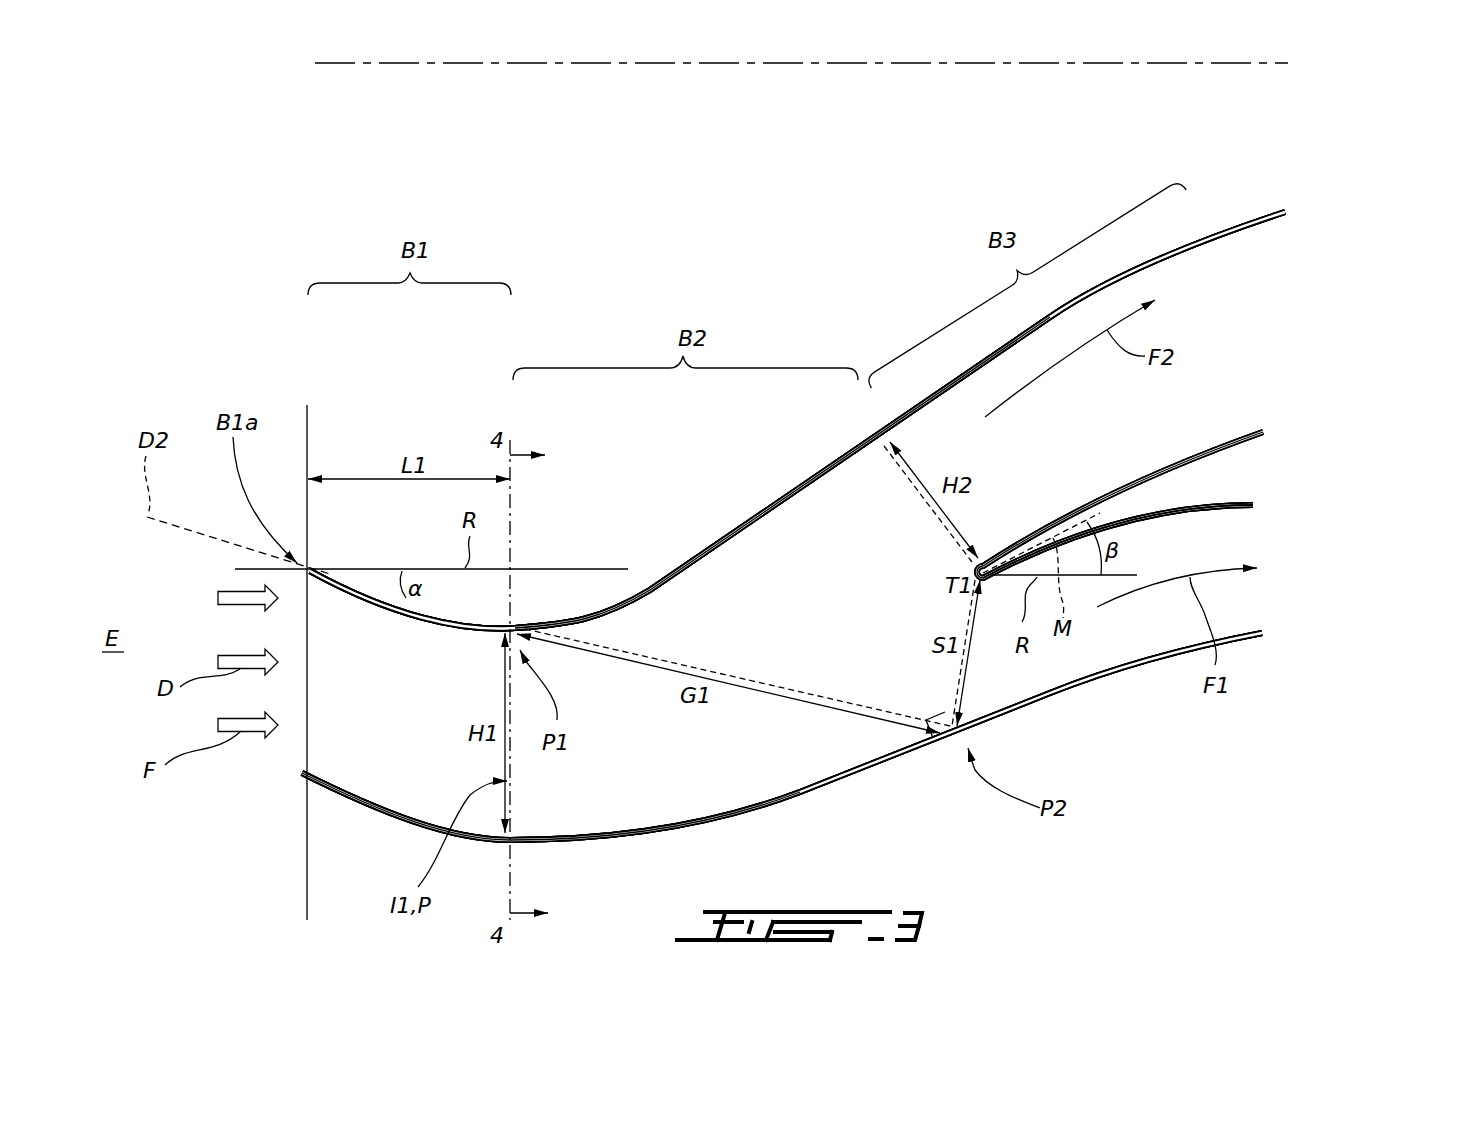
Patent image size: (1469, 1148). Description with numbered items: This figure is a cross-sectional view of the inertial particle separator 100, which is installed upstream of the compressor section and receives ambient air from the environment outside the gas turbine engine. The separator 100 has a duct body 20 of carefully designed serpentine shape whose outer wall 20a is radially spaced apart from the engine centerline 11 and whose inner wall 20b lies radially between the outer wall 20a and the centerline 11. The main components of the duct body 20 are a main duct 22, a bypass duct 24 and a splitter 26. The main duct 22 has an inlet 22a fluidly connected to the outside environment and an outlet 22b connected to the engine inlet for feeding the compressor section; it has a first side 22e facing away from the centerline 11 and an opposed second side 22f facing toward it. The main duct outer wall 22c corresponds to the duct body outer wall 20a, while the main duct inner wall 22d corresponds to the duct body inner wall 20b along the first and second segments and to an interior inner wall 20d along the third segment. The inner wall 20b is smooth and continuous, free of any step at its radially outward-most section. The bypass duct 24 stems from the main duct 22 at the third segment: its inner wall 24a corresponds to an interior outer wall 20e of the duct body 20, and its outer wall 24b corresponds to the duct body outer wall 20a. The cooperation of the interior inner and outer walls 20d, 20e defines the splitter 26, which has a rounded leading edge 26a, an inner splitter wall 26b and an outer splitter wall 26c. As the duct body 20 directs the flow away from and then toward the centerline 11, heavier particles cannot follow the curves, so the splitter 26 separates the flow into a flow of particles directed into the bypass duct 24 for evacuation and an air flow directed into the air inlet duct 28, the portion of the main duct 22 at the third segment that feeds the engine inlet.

The centerline 11 is at (406, 68).
The duct body 20 is at (1220, 200).
The inertial particle separator 100 is at (1402, 200).
The main duct 22 is at (819, 420).
The air inlet duct 28 is at (1192, 242).
The inlet 22a is at (803, 637).
The outlet 22b is at (1272, 366).
The outer wall 22c is at (701, 824).
The inner wall 22d is at (634, 600).
The first side 22e is at (628, 839).
The second side 22f is at (818, 476).
The outer wall 20a is at (836, 785).
The inner wall 20b is at (732, 538).
The interior inner wall 20d is at (1248, 440).
The interior outer wall 20e is at (1190, 515).
The bypass duct 24 is at (1247, 513).
The inner wall 24a is at (1208, 556).
The outer wall 24b is at (1248, 637).
The splitter 26 is at (990, 551).
The leading edge 26a is at (974, 567).
The inner splitter wall 26b is at (1135, 488).
The outer splitter wall 26c is at (1172, 508).